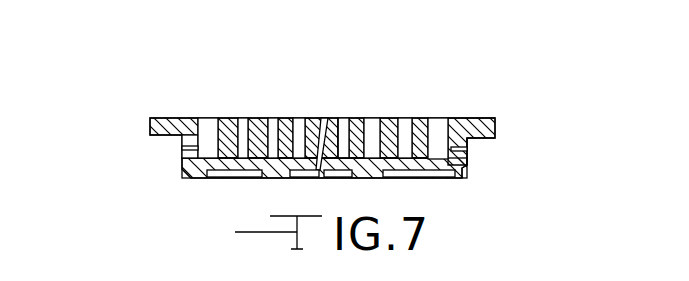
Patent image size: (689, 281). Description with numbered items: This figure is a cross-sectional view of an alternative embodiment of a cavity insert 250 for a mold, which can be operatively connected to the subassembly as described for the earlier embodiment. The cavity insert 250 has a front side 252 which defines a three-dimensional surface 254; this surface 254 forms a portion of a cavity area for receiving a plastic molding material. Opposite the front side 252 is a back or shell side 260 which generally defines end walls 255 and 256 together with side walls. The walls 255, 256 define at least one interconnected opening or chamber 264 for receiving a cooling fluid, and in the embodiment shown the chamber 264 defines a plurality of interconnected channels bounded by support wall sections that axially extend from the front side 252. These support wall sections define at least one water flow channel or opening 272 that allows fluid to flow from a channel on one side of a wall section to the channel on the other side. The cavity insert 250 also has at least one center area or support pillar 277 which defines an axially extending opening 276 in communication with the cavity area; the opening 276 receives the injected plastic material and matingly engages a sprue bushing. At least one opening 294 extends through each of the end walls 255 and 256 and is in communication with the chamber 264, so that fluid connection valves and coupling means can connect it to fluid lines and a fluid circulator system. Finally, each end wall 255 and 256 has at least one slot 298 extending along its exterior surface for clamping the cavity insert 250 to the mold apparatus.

The cavity insert 250 is at (98, 122).
The front side 252 is at (183, 182).
The three-dimensional surface 254 is at (326, 193).
The end wall 255 is at (183, 172).
The end wall 256 is at (467, 167).
The back or shell side 260 is at (186, 104).
The opening or chamber 264 is at (438, 110).
The water flow channel or opening 272 is at (253, 118).
The axially extending opening 276 is at (325, 118).
The center area or support pillar 277 is at (343, 118).
The opening 294 is at (183, 148).
The slot 298 is at (182, 178).